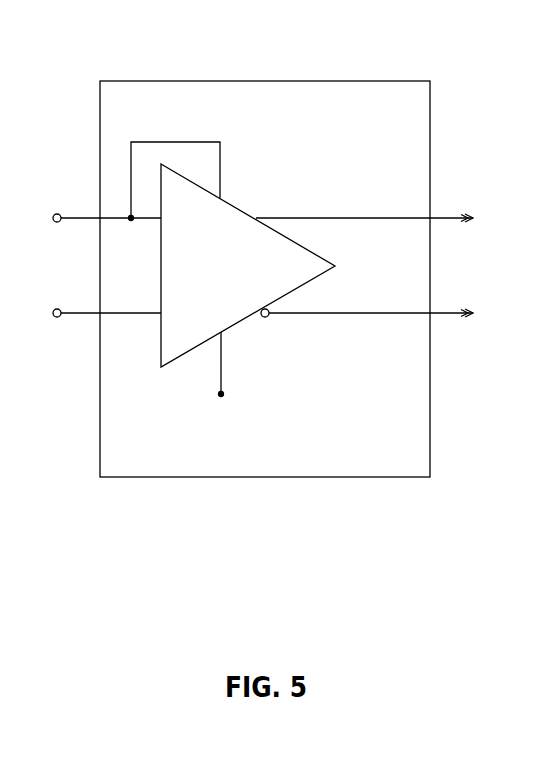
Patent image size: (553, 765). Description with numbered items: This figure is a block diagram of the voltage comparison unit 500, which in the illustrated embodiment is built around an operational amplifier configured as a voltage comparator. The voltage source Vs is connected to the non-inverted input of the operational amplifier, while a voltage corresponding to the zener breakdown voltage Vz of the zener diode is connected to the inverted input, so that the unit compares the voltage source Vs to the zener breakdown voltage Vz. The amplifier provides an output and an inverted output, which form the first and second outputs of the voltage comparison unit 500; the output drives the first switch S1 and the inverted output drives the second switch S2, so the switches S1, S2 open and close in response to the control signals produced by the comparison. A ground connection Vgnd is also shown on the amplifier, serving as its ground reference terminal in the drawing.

The voltage comparison unit 500 is at (265, 254).
The voltage source Vs is at (91, 218).
The zener breakdown voltage Vz is at (91, 313).
The first switch S1 is at (382, 216).
The second switch S2 is at (385, 314).
The ground terminal Vgnd is at (222, 379).